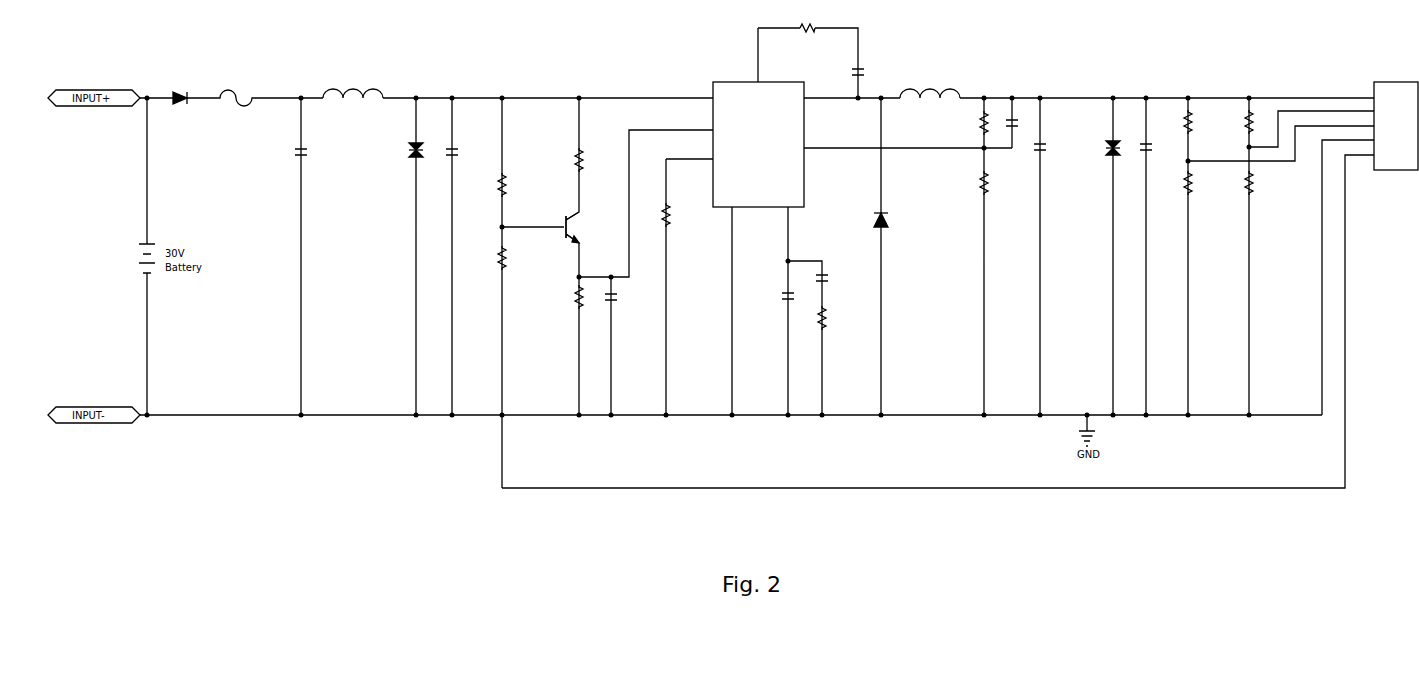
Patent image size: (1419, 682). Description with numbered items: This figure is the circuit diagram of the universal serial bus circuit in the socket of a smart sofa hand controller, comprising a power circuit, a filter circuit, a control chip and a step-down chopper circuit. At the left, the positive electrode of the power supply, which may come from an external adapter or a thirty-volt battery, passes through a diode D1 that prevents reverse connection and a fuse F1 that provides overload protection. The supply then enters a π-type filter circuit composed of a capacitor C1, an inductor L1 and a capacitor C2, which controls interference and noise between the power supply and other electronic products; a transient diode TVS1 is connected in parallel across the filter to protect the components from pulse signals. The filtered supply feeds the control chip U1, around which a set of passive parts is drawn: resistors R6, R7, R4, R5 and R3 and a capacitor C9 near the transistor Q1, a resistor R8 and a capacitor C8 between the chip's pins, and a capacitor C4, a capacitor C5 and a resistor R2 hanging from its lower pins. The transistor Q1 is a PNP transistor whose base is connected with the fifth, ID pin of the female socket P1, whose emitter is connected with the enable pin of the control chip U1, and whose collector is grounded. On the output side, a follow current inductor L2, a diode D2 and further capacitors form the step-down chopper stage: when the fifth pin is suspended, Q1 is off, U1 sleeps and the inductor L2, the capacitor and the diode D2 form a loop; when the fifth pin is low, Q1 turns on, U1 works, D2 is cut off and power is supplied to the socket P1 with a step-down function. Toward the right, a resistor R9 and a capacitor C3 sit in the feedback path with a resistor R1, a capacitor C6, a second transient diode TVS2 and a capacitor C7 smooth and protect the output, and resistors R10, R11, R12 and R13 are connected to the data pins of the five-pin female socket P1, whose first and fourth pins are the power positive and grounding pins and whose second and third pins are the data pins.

The diode D1 is at (180, 90).
The fuse F1 is at (237, 89).
The inductor L1 is at (353, 87).
The capacitor C1 is at (307, 152).
The transient diode TVS1 is at (396, 145).
The capacitor C2 is at (458, 152).
The resistor R6 is at (509, 185).
The resistor R7 is at (509, 258).
The resistor R4 is at (586, 160).
The transistor Q1 is at (583, 227).
The resistor R5 is at (586, 297).
The capacitor C9 is at (617, 297).
The resistor R3 is at (673, 215).
The control chip U1 is at (760, 147).
The resistor R8 is at (803, 20).
The bootstrap capacitor C8 is at (864, 72).
The follow current inductor L2 is at (930, 87).
The diode D2 is at (888, 220).
The capacitor C4 is at (794, 296).
The capacitor C5 is at (828, 278).
The resistor R2 is at (829, 318).
The resistor R9 is at (991, 123).
The capacitor C3 is at (1018, 123).
The capacitor C6 is at (1046, 142).
The transient voltage suppressor TVS2 is at (1100, 143).
The capacitor C7 is at (1152, 147).
The resistor R1 is at (991, 183).
The resistor R10 is at (1198, 122).
The resistor R11 is at (1198, 183).
The resistor R12 is at (1259, 122).
The resistor R13 is at (1259, 183).
The USB female socket P1 is at (1396, 127).